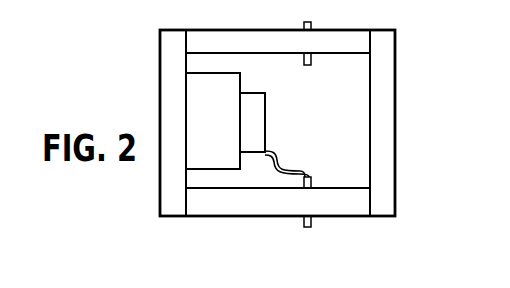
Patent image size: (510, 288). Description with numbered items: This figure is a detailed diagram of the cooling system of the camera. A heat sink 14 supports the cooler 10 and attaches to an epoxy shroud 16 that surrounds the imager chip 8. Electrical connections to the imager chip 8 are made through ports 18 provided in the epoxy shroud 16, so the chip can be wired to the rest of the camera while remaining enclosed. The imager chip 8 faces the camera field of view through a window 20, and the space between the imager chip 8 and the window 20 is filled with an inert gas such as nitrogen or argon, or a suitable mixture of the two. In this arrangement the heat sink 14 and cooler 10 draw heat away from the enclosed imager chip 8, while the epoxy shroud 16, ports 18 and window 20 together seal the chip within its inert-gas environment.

The imager chip 8 is at (263, 136).
The cooler 10 is at (234, 80).
The heat sink 14 is at (171, 84).
The epoxy shroud 16 is at (243, 215).
The ports 18 is at (311, 222).
The window 20 is at (384, 93).